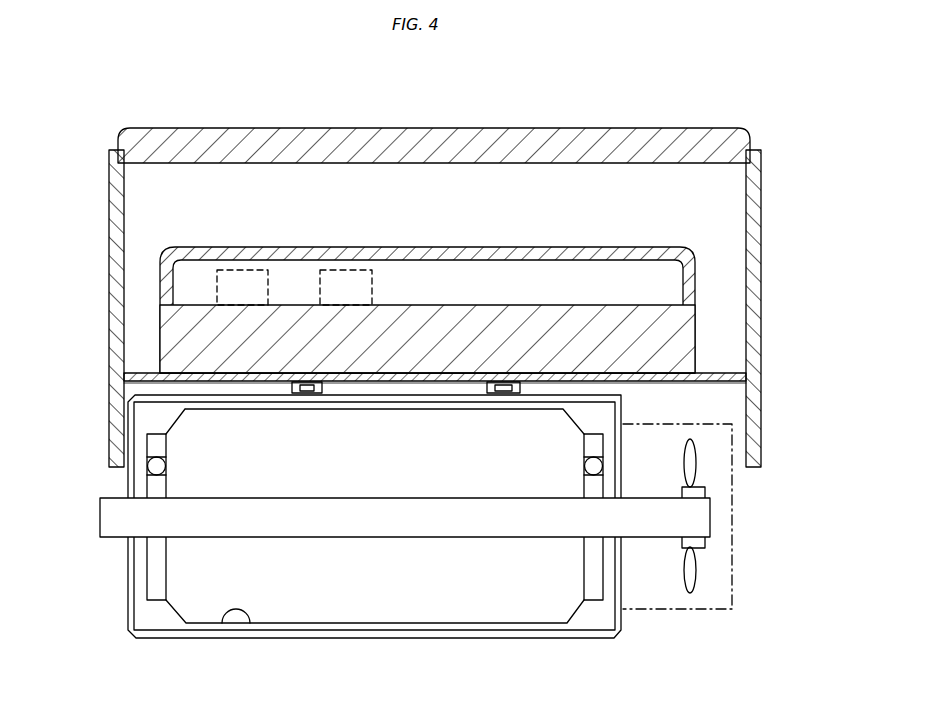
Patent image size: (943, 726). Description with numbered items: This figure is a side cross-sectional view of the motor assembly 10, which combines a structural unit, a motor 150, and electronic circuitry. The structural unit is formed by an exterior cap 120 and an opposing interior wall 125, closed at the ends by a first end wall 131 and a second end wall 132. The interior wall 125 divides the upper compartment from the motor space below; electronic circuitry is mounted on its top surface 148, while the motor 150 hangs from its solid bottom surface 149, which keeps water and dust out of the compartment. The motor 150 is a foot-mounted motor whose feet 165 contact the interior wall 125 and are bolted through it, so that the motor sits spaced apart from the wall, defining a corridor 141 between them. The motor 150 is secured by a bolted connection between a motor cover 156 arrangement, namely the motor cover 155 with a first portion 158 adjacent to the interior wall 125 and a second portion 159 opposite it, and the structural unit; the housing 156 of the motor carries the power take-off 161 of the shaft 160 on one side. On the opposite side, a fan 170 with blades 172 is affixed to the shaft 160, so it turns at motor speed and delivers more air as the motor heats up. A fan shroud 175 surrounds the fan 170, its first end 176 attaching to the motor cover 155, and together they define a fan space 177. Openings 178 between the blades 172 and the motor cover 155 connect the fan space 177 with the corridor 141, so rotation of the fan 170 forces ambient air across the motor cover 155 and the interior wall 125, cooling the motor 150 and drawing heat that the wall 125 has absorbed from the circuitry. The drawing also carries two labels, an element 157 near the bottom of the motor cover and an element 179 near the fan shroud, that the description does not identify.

The motor assembly 10 is at (692, 92).
The exterior cap 120 is at (444, 127).
The interior wall 125 is at (731, 366).
The first end wall 131 is at (762, 233).
The second end wall 132 is at (109, 242).
The corridor 141 is at (590, 388).
The top surface 148 is at (135, 373).
The bottom surface 149 is at (137, 390).
The motor 150 is at (341, 605).
The motor cover 155 is at (525, 643).
The housing 156 is at (280, 640).
The housing bottom portion 157 is at (226, 628).
The first portion 158 is at (212, 397).
The second portion 159 is at (435, 645).
The shaft 160 is at (240, 530).
The power take-off of the motor 161 is at (107, 522).
The feet 165 is at (306, 394).
The fan 170 is at (708, 555).
The blades 172 is at (694, 580).
The fan shroud 175 is at (745, 605).
The first end 176 is at (622, 608).
The fan space 177 is at (687, 605).
The openings 178 is at (651, 442).
The boundary 179 is at (735, 541).